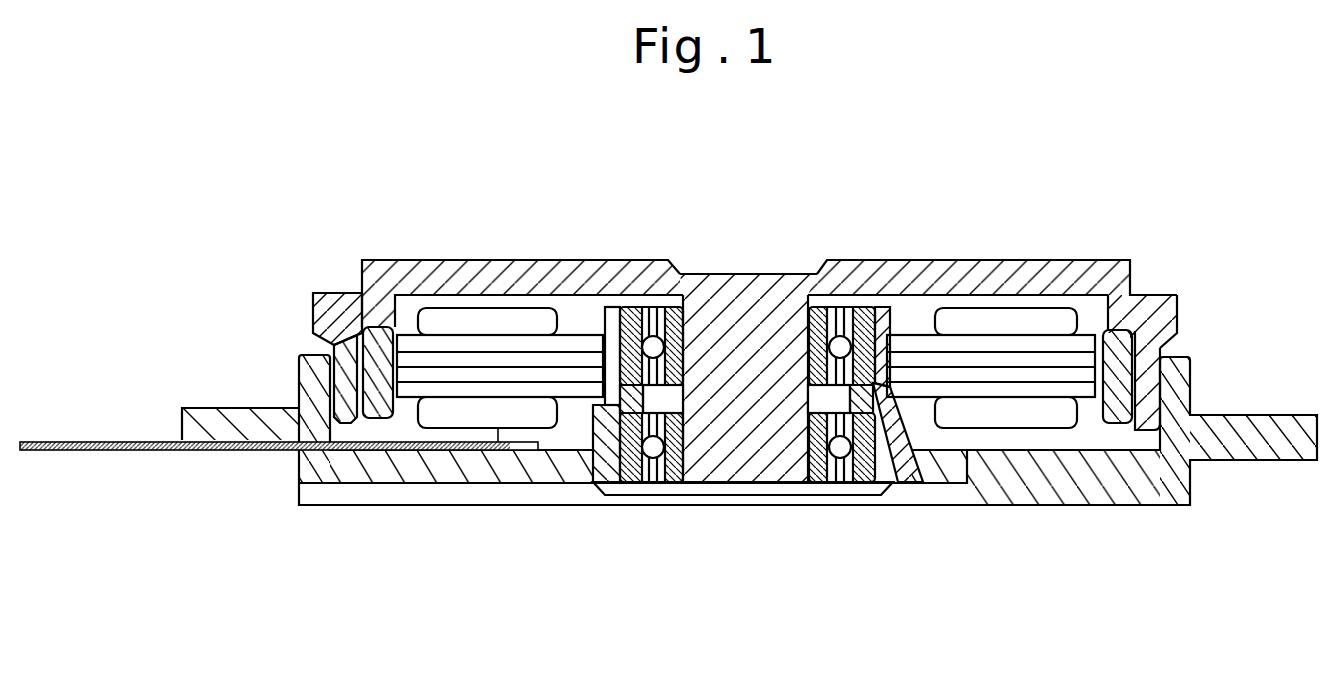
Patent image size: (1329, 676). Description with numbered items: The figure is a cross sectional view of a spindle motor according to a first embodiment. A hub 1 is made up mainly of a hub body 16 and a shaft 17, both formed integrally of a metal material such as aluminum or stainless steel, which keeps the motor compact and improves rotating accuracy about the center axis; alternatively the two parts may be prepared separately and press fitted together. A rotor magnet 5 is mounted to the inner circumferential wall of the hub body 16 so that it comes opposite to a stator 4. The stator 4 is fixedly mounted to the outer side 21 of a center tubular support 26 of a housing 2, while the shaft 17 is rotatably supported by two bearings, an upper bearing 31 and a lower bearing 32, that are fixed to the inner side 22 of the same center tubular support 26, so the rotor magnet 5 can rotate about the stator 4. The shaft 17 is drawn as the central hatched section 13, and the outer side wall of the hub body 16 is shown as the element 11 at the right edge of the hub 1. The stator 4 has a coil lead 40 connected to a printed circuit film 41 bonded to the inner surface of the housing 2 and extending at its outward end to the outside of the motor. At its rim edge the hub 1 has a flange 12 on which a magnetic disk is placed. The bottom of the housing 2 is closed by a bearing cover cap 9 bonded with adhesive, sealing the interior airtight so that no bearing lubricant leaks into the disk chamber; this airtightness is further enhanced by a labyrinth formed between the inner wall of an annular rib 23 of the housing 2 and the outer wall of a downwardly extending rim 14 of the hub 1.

The hub 1 is at (1092, 257).
The housing 2 is at (1088, 505).
The stator 4 is at (958, 343).
The rotor magnet 5 is at (380, 343).
The bearing cover cap 9 is at (651, 492).
The cover side wall 11 is at (1128, 265).
The flange 12 is at (1170, 295).
The shaft 13 is at (737, 297).
The downwardly extending rim 14 is at (348, 345).
The hub body 16 is at (1003, 272).
The shaft 17 is at (720, 486).
The outer side of center tubular support 21 is at (893, 333).
The inner side of center tubular support 22 is at (882, 480).
The annular rib 23 is at (352, 428).
The center tubular support 26 is at (590, 343).
The upper bearing 31 is at (650, 300).
The lower bearing 32 is at (816, 492).
The coil lead 40 is at (512, 452).
The printed circuit film 41 is at (145, 452).